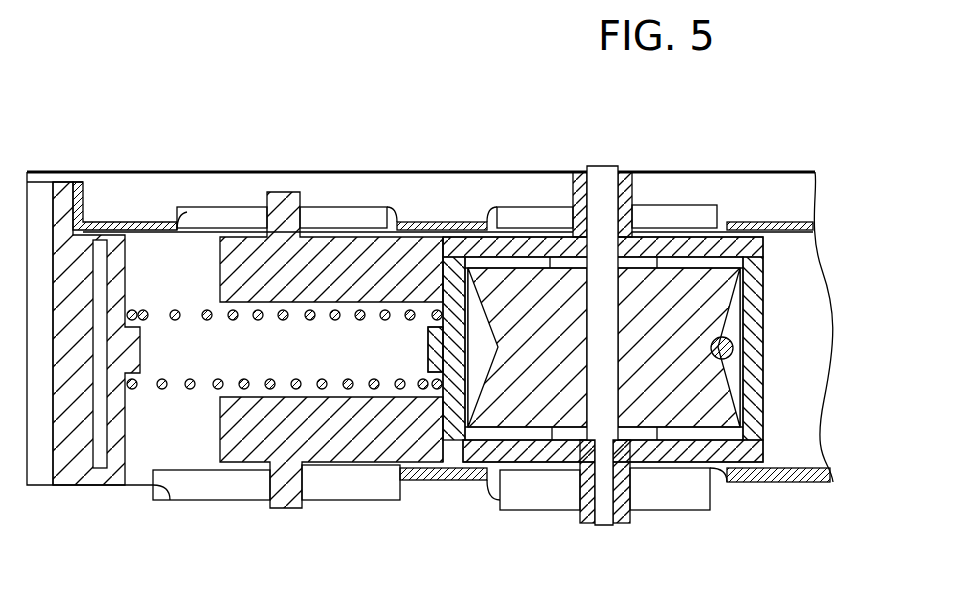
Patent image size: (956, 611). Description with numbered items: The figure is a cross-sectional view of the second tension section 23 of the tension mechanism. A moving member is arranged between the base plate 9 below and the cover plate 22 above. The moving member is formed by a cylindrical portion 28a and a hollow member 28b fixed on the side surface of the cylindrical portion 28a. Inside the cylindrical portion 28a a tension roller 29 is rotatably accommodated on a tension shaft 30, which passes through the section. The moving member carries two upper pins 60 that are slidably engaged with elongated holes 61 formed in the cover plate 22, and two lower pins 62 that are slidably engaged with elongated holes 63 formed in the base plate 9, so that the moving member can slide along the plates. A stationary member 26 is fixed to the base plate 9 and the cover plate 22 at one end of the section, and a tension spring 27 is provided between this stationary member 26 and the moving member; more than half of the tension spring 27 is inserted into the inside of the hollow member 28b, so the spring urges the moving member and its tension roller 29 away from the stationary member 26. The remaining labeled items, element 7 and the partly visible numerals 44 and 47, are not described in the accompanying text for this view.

The second tension section 23 is at (443, 150).
The stationary member 26 is at (78, 398).
The cover plate 22 is at (455, 222).
The base plate 9 is at (450, 477).
The elongated holes 61 is at (208, 215).
The elongated holes 63 is at (218, 483).
The hollow member 28b is at (340, 265).
The cylindrical portion 28a is at (640, 243).
The upper pins 60 is at (283, 200).
The lower pins 62 is at (287, 492).
The tension roller 29 is at (698, 310).
The tension shaft 30 is at (605, 190).
The ball 7 is at (740, 345).
The tension spring 27 is at (175, 305).
The element 44 is at (290, 9).
The element 47 is at (382, 14).